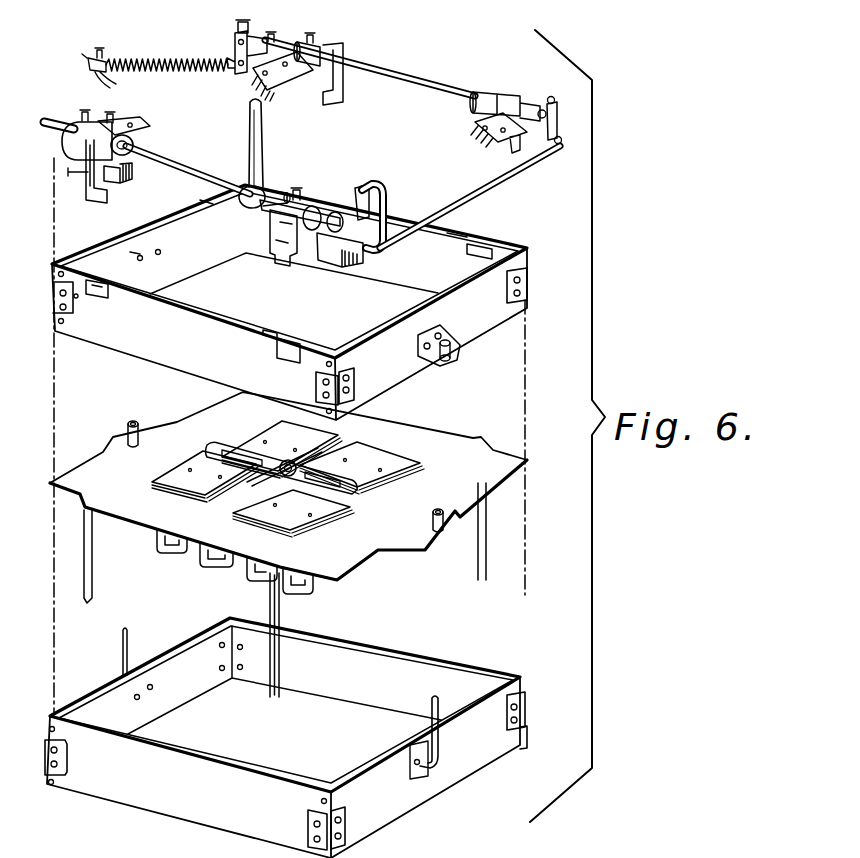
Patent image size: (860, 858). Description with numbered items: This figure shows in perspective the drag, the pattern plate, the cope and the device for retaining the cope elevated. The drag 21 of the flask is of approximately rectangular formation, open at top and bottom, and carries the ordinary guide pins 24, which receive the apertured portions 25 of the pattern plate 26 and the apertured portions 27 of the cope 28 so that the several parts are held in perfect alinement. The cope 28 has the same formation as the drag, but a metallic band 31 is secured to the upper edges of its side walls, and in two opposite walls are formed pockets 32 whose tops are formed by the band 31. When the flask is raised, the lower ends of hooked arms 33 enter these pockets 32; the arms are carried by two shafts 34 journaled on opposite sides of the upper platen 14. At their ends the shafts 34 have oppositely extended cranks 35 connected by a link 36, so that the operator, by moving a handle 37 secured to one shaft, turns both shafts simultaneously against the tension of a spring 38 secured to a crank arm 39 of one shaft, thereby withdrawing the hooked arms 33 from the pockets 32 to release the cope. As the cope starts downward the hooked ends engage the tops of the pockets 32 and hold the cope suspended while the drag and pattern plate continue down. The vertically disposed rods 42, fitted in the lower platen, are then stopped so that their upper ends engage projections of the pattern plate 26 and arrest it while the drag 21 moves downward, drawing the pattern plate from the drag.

The upper platen 14 is at (336, 250).
The drag 21 is at (214, 782).
The guide pins 24 is at (442, 753).
The apertured portions 25 is at (440, 536).
The pattern plate 26 is at (404, 510).
The apertured portions 27 is at (452, 360).
The cope 28 is at (503, 312).
The metallic band 31 is at (300, 195).
The pockets 32 is at (478, 250).
The hooked arms 33 is at (507, 97).
The shafts 34 is at (418, 80).
The cranks 35 is at (565, 118).
The link 36 is at (512, 174).
The handle 37 is at (260, 165).
The spring 38 is at (193, 52).
The crank arm 39 is at (237, 44).
The rods 42 is at (482, 572).